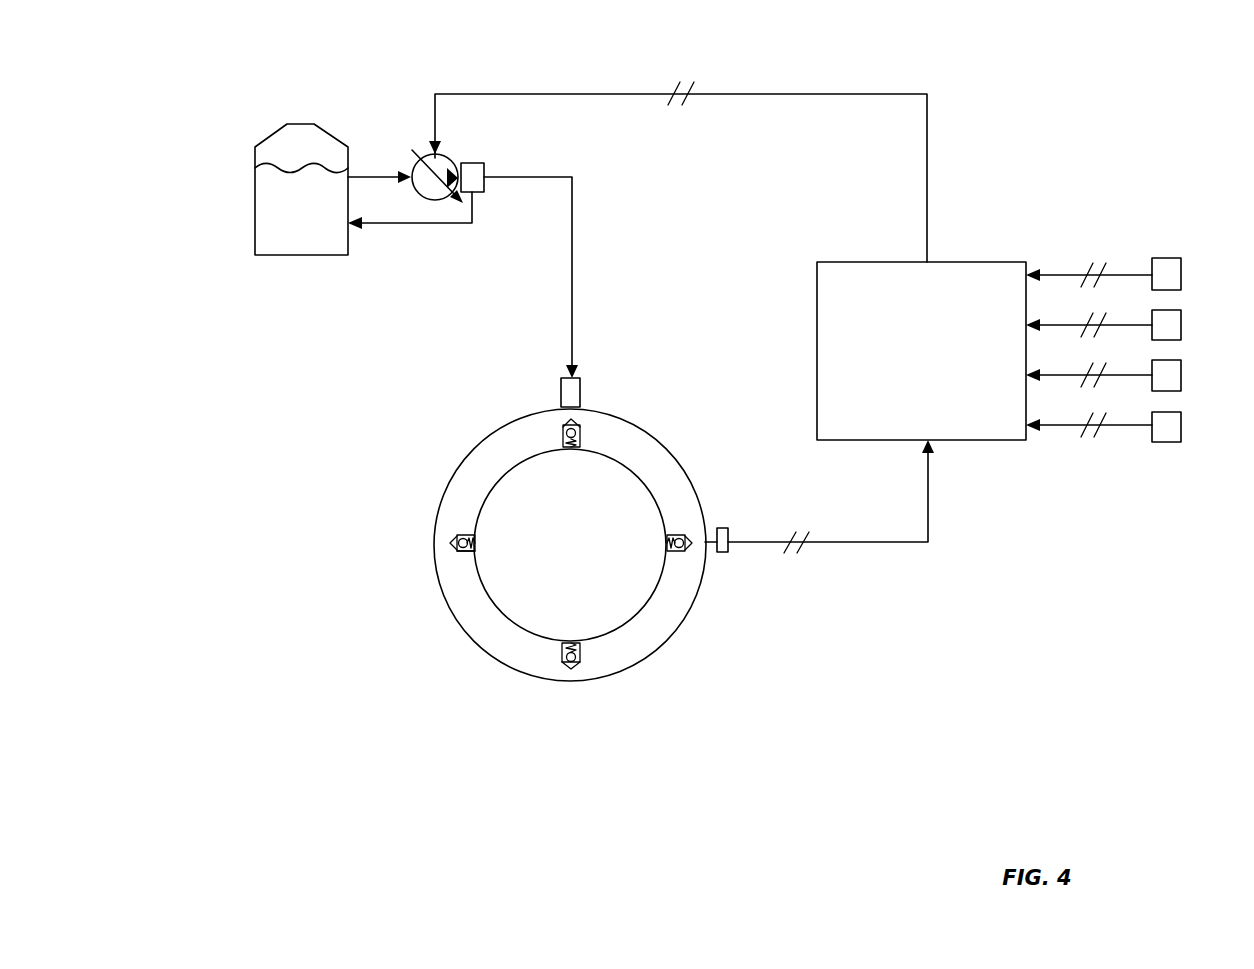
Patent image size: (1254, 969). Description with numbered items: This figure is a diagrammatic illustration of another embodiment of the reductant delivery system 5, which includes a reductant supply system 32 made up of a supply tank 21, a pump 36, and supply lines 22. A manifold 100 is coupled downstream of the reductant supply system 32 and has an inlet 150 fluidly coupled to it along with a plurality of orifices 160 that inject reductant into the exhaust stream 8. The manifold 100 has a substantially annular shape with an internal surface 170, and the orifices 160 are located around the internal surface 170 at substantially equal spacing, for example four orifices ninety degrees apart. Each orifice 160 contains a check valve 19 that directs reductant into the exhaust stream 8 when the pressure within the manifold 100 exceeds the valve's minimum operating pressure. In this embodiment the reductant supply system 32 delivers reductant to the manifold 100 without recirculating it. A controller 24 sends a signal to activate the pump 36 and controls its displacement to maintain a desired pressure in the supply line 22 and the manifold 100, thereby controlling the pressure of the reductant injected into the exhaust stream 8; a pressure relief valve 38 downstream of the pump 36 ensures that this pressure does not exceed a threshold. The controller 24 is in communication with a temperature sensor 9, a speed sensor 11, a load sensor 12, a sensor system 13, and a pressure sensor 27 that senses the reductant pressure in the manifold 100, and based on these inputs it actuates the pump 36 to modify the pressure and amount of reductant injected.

The reductant delivery system 5 is at (116, 78).
The exhaust stream 8 is at (563, 556).
The temperature sensor 9 is at (1182, 274).
The speed sensor 11 is at (1182, 324).
The load sensor 12 is at (1182, 374).
The sensor system 13 is at (1182, 424).
The check valve 19 is at (580, 430).
The supply tank 21 is at (255, 177).
The supply line 22 is at (383, 175).
The controller 24 is at (910, 359).
The pressure sensor 27 is at (724, 553).
The reductant supply system 32 is at (195, 223).
The pump 36 is at (452, 155).
The pressure relief valve 38 is at (486, 168).
The manifold 100 is at (437, 518).
The inlet 150 is at (581, 394).
The orifices 160 is at (562, 432).
The internal surface 170 is at (463, 552).